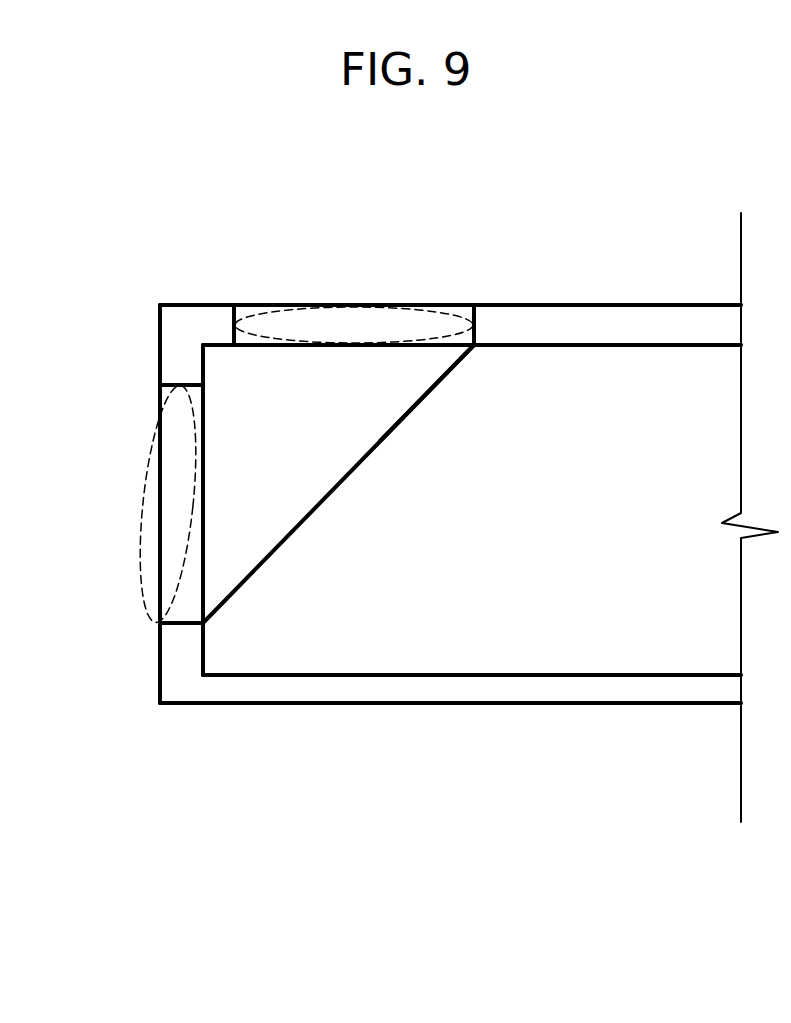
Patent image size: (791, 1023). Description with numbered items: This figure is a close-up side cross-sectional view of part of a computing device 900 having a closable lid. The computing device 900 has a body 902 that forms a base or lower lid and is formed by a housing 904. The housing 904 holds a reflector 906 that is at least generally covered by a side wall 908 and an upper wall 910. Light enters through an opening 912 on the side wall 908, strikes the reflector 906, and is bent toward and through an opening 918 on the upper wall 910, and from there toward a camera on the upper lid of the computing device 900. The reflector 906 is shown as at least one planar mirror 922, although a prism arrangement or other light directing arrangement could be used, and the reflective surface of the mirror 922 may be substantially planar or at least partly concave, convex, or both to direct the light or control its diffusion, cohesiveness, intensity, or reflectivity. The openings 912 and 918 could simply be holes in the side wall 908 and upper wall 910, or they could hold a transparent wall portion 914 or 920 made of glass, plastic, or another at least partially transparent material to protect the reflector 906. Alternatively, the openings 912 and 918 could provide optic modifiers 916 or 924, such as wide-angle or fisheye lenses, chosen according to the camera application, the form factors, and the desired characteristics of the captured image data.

The computing device 900 is at (586, 208).
The body 902 is at (585, 303).
The housing 904 is at (517, 695).
The reflector 906 is at (365, 460).
The side wall 908 is at (182, 655).
The upper wall 910 is at (523, 316).
The opening 912 is at (193, 385).
The transparent wall portion 914 is at (158, 465).
The optic modifier 916 is at (140, 522).
The opening 918 is at (237, 318).
The transparent wall portion 920 is at (283, 305).
The planar mirror 922 is at (428, 397).
The optic modifier 924 is at (438, 314).